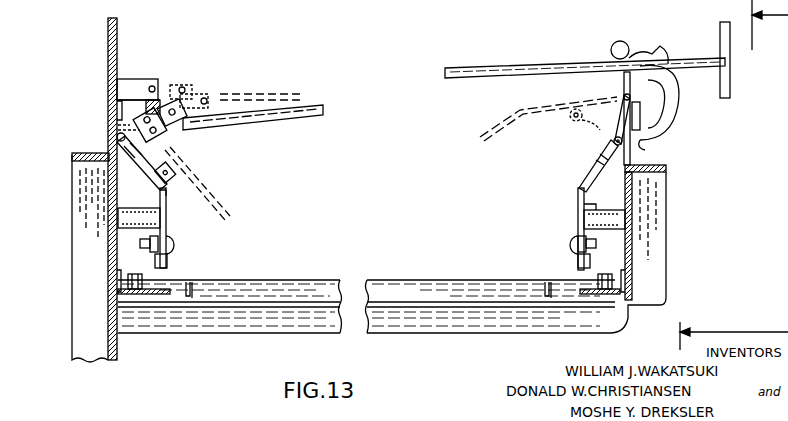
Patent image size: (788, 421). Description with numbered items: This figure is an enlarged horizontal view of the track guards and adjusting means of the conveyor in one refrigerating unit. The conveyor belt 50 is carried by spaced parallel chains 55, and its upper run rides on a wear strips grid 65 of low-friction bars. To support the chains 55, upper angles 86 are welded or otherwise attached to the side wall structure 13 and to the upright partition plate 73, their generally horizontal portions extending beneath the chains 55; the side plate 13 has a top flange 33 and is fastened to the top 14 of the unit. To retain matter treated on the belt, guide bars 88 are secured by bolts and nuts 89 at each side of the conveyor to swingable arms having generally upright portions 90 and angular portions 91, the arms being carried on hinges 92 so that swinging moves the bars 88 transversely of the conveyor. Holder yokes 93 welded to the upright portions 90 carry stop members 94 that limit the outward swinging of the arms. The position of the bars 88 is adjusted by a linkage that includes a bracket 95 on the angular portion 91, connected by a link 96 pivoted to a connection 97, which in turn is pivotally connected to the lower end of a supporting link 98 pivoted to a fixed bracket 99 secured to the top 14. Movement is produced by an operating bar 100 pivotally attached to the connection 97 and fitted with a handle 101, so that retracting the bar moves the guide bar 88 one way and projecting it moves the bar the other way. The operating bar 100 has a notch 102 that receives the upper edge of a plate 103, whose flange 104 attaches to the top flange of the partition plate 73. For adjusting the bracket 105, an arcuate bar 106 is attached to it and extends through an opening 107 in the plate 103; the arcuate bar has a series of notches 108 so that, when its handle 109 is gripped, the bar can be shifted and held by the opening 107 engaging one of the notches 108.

The side wall structure 13 is at (85, 246).
The top 14 is at (108, 70).
The top flange 33 is at (88, 162).
The conveyor belt 50 is at (404, 282).
The chains 55 is at (125, 290).
The wear strips grid 65 is at (287, 290).
The partition plates 73 is at (660, 242).
The upper angles 86 is at (117, 273).
The guide bars 88 is at (167, 270).
The bolts and nuts 89 is at (171, 246).
The upright portions 90 is at (166, 228).
The angular portions 91 is at (140, 172).
The hinges 92 is at (117, 137).
The holder yokes 93 is at (167, 202).
The stop members 94 is at (121, 218).
The bracket 95 is at (172, 178).
The link 96 is at (182, 148).
The connection 97 is at (138, 130).
The supporting link 98 is at (162, 105).
The fixed bracket 99 is at (137, 80).
The operating bar 100 is at (282, 118).
The handle 101 is at (731, 80).
The notch 102 is at (608, 62).
The plate 103 is at (623, 90).
The flange 104 is at (666, 170).
The bracket 105 is at (613, 142).
The arcuate bar 106 is at (658, 46).
The opening 107 is at (648, 143).
The notches 108 is at (678, 118).
The handle 109 is at (614, 44).